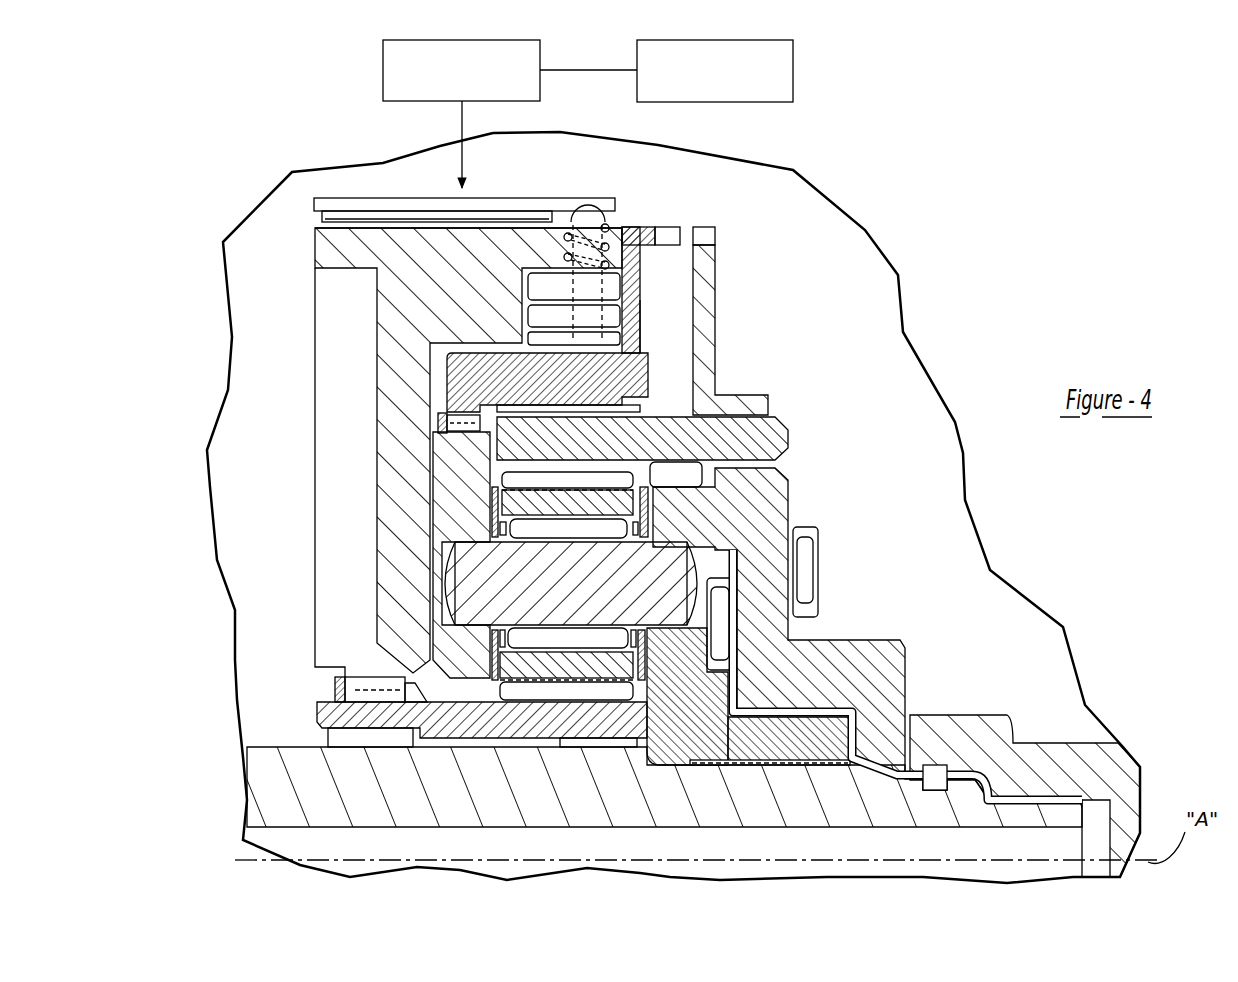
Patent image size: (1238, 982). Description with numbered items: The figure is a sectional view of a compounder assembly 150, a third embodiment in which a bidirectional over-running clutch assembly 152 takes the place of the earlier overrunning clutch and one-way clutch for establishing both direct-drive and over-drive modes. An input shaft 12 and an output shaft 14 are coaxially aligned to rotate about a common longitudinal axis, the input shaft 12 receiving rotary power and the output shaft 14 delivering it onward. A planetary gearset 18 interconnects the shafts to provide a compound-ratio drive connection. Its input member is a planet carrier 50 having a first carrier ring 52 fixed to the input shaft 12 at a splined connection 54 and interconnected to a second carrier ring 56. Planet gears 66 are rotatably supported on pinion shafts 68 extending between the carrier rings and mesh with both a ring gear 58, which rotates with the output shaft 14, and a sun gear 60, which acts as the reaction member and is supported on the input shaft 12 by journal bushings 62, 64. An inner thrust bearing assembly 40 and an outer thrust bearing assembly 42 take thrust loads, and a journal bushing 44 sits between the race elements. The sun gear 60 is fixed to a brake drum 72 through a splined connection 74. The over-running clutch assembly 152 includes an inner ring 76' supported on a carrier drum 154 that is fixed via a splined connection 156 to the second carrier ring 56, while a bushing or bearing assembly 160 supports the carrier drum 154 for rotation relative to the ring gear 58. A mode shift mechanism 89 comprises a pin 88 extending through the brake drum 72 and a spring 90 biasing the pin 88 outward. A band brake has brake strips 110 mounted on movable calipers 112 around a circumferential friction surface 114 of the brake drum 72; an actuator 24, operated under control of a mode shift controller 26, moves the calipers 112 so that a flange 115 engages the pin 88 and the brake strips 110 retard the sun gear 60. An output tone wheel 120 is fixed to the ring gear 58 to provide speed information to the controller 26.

The input shaft 12 is at (290, 786).
The output shaft 14 is at (967, 735).
The planetary gearset 18 is at (710, 528).
The actuator 24 is at (540, 44).
The mode shift controller 26 is at (793, 65).
The inner thrust bearing assembly 40 is at (725, 627).
The outer thrust bearing assembly 42 is at (812, 573).
The journal bushing 44 is at (820, 708).
The planet carrier 50 is at (702, 726).
The first carrier ring 52 is at (823, 735).
The splined connection 54 is at (792, 766).
The second carrier ring 56 is at (465, 500).
The ring gear 58 is at (575, 453).
The sun gear 60 is at (477, 734).
The journal bushing 62 is at (358, 742).
The journal bushing 64 is at (587, 746).
The planet gear 66 is at (596, 510).
The pinion shaft 68 is at (575, 593).
The brake drum 72 is at (397, 415).
The splined connection 74 is at (372, 680).
The inner ring 76' is at (602, 326).
The pin 88 is at (585, 220).
The mode shift mechanism 89 is at (620, 216).
The spring 90 is at (609, 247).
The brake strips 110 is at (343, 220).
The movable calipers 112 is at (377, 205).
The circumferential friction surface 114 is at (490, 227).
The flange 115 is at (674, 236).
The output tone wheel 120 is at (708, 282).
The compounder assembly 150 is at (1018, 256).
The bidirectional over-running clutch assembly 152 is at (625, 302).
The carrier drum 154 is at (457, 372).
The splined connection 156 is at (463, 430).
The bushing or bearing assembly 160 is at (627, 407).